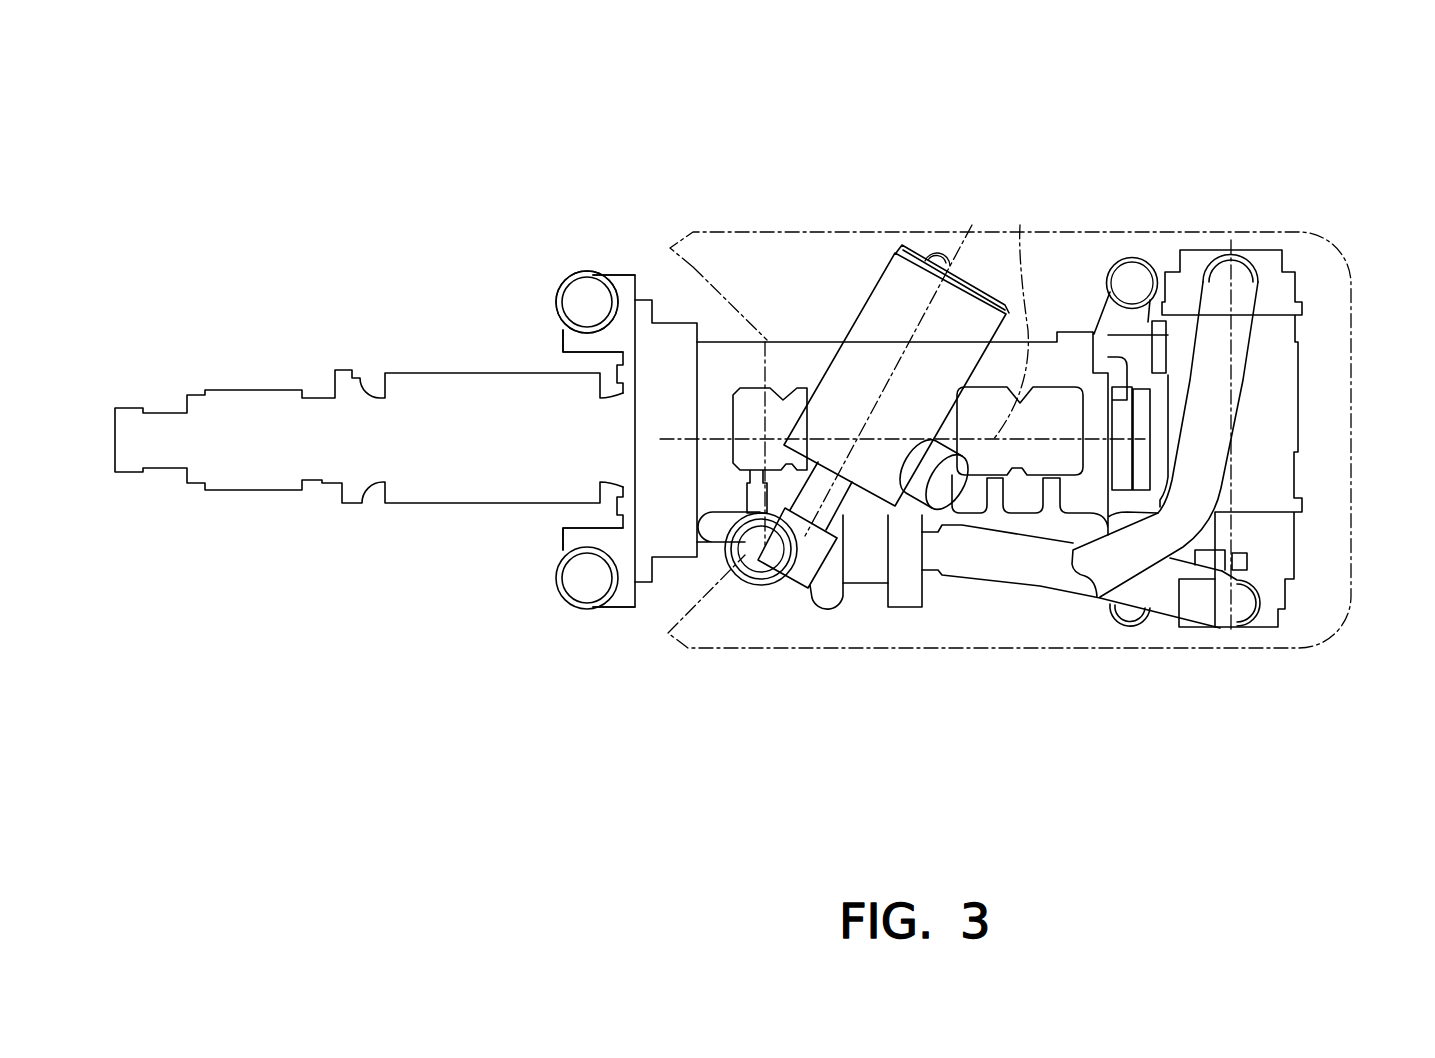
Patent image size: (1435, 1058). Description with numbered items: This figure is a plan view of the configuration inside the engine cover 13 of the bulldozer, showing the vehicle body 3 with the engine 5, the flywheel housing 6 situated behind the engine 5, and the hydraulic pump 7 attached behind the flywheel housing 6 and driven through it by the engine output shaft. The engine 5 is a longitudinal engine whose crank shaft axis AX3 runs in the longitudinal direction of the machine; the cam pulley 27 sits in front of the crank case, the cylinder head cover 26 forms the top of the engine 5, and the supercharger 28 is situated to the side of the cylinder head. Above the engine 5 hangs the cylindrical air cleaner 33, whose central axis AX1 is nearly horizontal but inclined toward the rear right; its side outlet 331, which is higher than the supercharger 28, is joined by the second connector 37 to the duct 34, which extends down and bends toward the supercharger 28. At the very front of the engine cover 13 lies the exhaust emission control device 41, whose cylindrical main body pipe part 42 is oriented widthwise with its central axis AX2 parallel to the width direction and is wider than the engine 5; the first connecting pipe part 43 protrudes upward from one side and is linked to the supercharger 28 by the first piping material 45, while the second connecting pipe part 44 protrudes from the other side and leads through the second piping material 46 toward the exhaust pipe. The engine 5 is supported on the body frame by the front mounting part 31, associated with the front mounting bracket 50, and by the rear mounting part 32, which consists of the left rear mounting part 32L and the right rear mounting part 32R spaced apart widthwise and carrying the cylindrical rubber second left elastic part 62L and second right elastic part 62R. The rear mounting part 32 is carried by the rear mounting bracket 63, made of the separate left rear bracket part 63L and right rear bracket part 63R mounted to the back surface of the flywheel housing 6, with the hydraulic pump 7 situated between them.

The vehicle body 3 is at (418, 177).
The engine 5 is at (1065, 322).
The flywheel housing 6 is at (660, 325).
The hydraulic pump 7 is at (283, 402).
The engine cover 13 is at (920, 245).
The cylinder head cover 26 is at (767, 402).
The cam pulley 27 is at (1145, 417).
The supercharger 28 is at (908, 588).
The front mounting part 31 is at (1142, 252).
The rear mounting part 32 is at (552, 273).
The left rear mounting part 32L is at (593, 290).
The right rear mounting part 32R is at (582, 588).
The air cleaner 33 is at (913, 248).
The outlet 331 is at (817, 588).
The duct 34 is at (748, 585).
The second connector 37 is at (803, 512).
The exhaust emission control device 41 is at (1224, 246).
The main body pipe part 42 is at (1282, 476).
The first connecting pipe part 43 is at (1265, 608).
The second connecting pipe part 44 is at (1262, 262).
The first piping material 45 is at (1194, 598).
The second piping material 46 is at (1217, 372).
The front mounting bracket 50 is at (1131, 352).
The second left elastic part 62L is at (556, 294).
The second right elastic part 62R is at (555, 574).
The rear mounting bracket 63 is at (637, 612).
The left rear bracket part 63L is at (627, 275).
The right rear bracket part 63R is at (625, 595).
The central axis of the air cleaner AX1 is at (972, 225).
The central axis of the main body pipe part AX2 is at (1234, 529).
The central axis of the crank shaft AX3 is at (1020, 225).